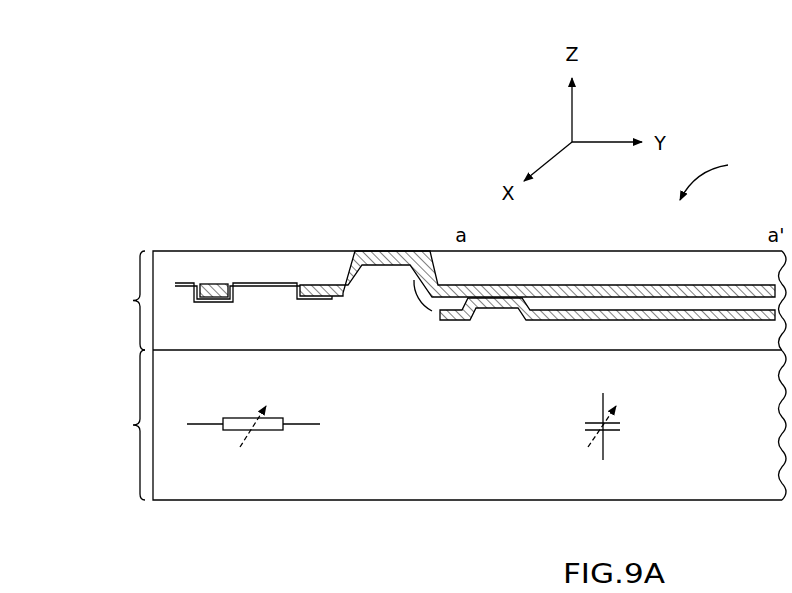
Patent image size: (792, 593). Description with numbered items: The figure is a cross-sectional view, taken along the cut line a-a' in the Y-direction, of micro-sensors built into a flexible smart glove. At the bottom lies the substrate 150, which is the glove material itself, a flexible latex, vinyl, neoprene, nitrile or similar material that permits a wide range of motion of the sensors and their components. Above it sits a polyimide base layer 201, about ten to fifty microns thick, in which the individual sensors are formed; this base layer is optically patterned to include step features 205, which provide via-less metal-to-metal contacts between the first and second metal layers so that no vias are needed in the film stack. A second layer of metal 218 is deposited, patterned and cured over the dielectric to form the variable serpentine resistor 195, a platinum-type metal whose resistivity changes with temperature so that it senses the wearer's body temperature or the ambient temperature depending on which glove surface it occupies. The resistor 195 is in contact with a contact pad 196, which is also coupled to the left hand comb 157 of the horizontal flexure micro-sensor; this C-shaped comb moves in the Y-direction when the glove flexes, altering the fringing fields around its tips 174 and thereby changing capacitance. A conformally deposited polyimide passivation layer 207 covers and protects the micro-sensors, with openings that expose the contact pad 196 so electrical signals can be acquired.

The flexible smart glove substrate 150 is at (357, 425).
The left hand comb 157 is at (723, 177).
The tips 174 is at (425, 251).
The variable serpentine resistor 195 is at (265, 283).
The contact pad 196 is at (372, 253).
The base layer 201 is at (119, 300).
The step features 205 is at (497, 317).
The passivation layer 207 is at (214, 284).
The second layer of metal 218 is at (648, 285).